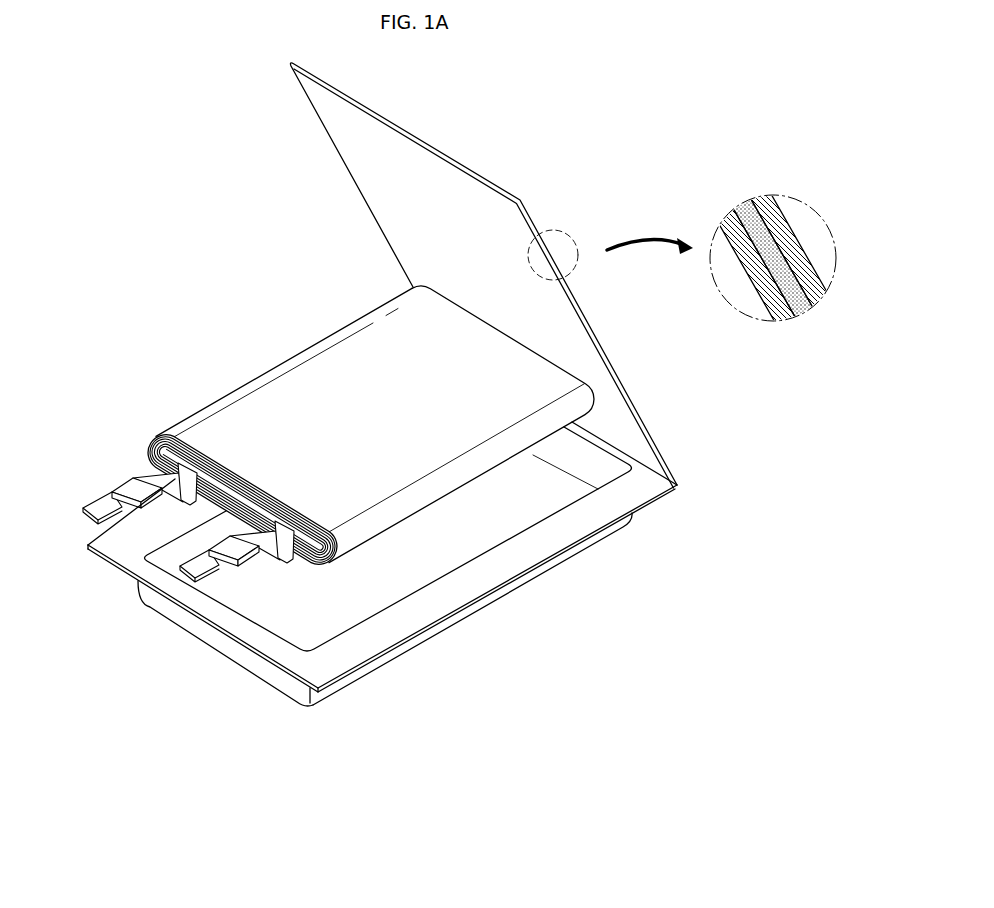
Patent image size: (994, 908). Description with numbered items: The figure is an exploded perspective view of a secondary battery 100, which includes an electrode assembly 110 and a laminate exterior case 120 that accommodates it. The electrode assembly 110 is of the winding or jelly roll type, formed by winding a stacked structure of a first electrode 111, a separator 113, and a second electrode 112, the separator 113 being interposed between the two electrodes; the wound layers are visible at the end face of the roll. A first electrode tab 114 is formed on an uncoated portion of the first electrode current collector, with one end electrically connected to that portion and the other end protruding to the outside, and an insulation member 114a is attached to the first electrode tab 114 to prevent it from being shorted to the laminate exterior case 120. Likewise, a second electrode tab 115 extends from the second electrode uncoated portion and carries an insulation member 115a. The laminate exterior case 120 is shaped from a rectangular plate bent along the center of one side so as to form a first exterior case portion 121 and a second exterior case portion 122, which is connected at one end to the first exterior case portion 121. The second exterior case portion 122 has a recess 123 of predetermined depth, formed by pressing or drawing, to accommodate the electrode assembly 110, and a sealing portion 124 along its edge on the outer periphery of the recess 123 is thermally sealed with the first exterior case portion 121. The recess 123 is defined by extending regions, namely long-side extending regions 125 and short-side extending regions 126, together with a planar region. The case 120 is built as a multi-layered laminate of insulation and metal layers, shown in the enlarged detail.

The secondary battery 100 is at (146, 191).
The electrode assembly 110 is at (200, 352).
The first electrode 111 is at (153, 432).
The second electrode 112 is at (148, 453).
The separator 113 is at (147, 437).
The first electrode tab 114 is at (177, 493).
The insulation member 114a is at (123, 487).
The second electrode tab 115 is at (300, 565).
The insulation member 115a is at (243, 568).
The laminate exterior case 120 is at (755, 437).
The first exterior case portion 121 is at (665, 445).
The second exterior case portion 122 is at (660, 502).
The recess 123 is at (425, 583).
The sealing portion 124 is at (533, 545).
The long-side extending region 125 is at (347, 688).
The short-side extending region 126 is at (268, 672).